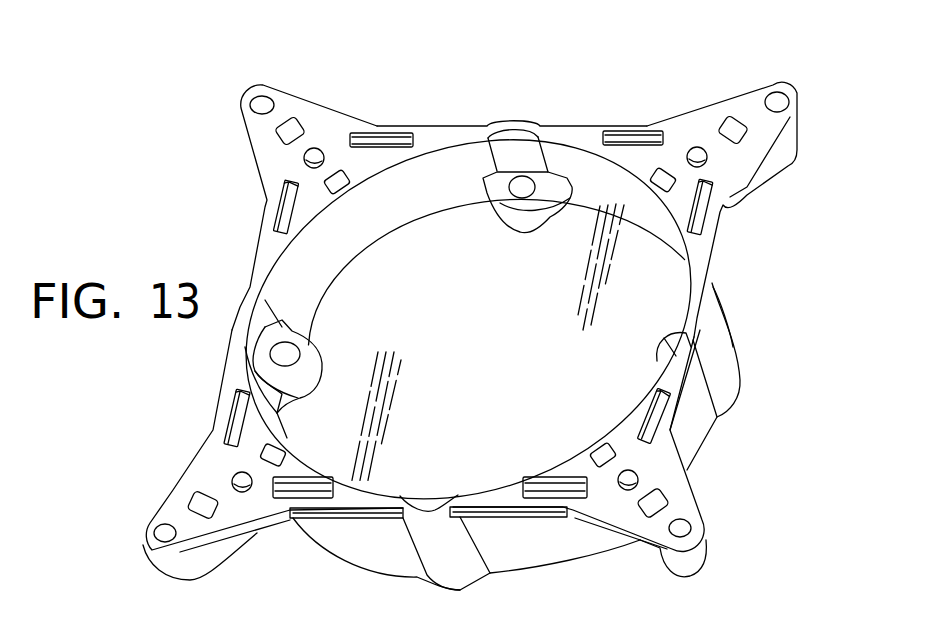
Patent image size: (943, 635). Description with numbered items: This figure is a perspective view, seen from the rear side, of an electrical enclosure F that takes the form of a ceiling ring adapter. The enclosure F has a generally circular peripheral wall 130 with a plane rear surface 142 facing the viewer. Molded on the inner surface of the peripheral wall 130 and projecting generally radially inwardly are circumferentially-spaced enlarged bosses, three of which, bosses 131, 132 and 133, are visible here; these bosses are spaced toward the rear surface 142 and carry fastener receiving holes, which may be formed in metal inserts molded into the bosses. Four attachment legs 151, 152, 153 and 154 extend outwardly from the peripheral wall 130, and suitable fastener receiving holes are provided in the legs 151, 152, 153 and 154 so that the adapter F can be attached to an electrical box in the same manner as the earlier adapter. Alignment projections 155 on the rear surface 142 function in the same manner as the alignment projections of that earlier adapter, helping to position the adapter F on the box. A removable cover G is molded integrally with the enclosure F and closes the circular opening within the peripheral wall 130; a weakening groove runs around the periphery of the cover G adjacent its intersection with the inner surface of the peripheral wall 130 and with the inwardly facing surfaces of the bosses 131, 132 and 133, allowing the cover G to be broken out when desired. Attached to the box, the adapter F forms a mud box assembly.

The peripheral wall 130 is at (400, 203).
The enlarged boss 131 is at (660, 343).
The enlarged boss 132 is at (540, 213).
The enlarged boss 133 is at (313, 370).
The rear surface 142 is at (427, 140).
The attachment leg 151 is at (797, 130).
The attachment leg 152 is at (254, 93).
The attachment leg 153 is at (175, 557).
The attachment leg 154 is at (693, 560).
The alignment projection 155 is at (650, 413).
The electrical enclosure F is at (543, 106).
The removable cover G is at (500, 361).